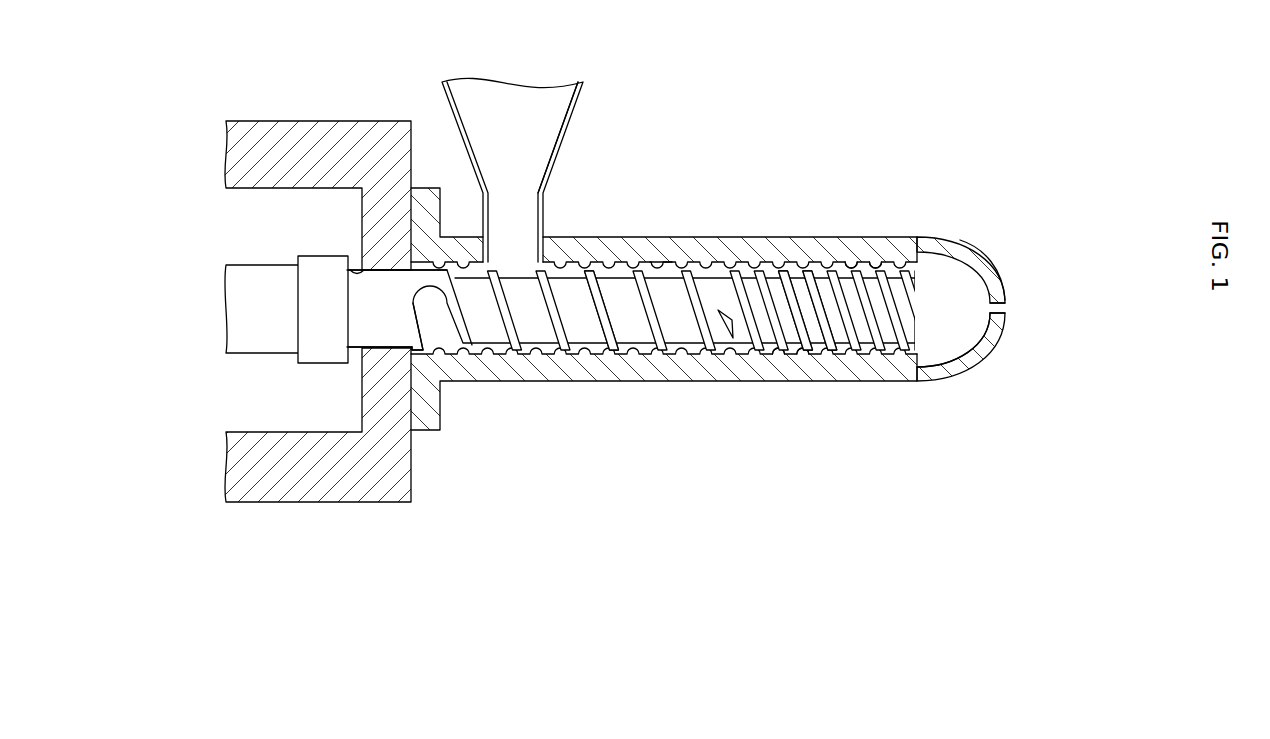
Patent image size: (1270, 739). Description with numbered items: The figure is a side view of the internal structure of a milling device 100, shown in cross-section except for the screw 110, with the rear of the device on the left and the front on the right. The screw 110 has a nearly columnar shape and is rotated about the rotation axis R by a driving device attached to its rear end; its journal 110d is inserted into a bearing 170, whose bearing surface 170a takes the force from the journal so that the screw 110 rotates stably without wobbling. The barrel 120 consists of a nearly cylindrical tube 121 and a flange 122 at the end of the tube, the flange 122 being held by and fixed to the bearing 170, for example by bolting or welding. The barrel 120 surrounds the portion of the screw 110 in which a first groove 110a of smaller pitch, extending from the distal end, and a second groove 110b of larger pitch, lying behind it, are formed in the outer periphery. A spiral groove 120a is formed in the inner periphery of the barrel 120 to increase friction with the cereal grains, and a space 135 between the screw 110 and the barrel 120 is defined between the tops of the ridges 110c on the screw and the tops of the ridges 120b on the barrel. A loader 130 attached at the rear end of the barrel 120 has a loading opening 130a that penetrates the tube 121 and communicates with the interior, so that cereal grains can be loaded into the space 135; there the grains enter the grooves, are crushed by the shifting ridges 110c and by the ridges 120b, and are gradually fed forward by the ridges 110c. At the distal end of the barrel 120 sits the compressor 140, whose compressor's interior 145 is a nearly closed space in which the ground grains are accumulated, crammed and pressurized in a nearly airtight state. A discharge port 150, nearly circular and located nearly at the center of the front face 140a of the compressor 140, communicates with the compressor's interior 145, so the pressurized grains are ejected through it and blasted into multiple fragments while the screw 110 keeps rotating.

The milling device 100 is at (768, 60).
The screw 110 is at (533, 347).
The first groove 110a is at (797, 274).
The second groove 110b is at (613, 280).
The ridges 110c is at (665, 350).
The journal 110d is at (438, 402).
The barrel 120 is at (751, 230).
The spiral groove 120a is at (874, 258).
The ridges 120b is at (801, 360).
The tube 121 is at (653, 260).
The flange 122 is at (432, 188).
The loader 130 is at (583, 90).
The loading opening 130a is at (557, 123).
The space 135 is at (661, 250).
The compressor 140 is at (949, 229).
The front face 140a is at (1007, 293).
The compressor's interior 145 is at (955, 343).
The discharge port 150 is at (1017, 314).
The bearing 170 is at (312, 133).
The bearing surface 170a is at (360, 270).
The rotation axis R is at (224, 311).